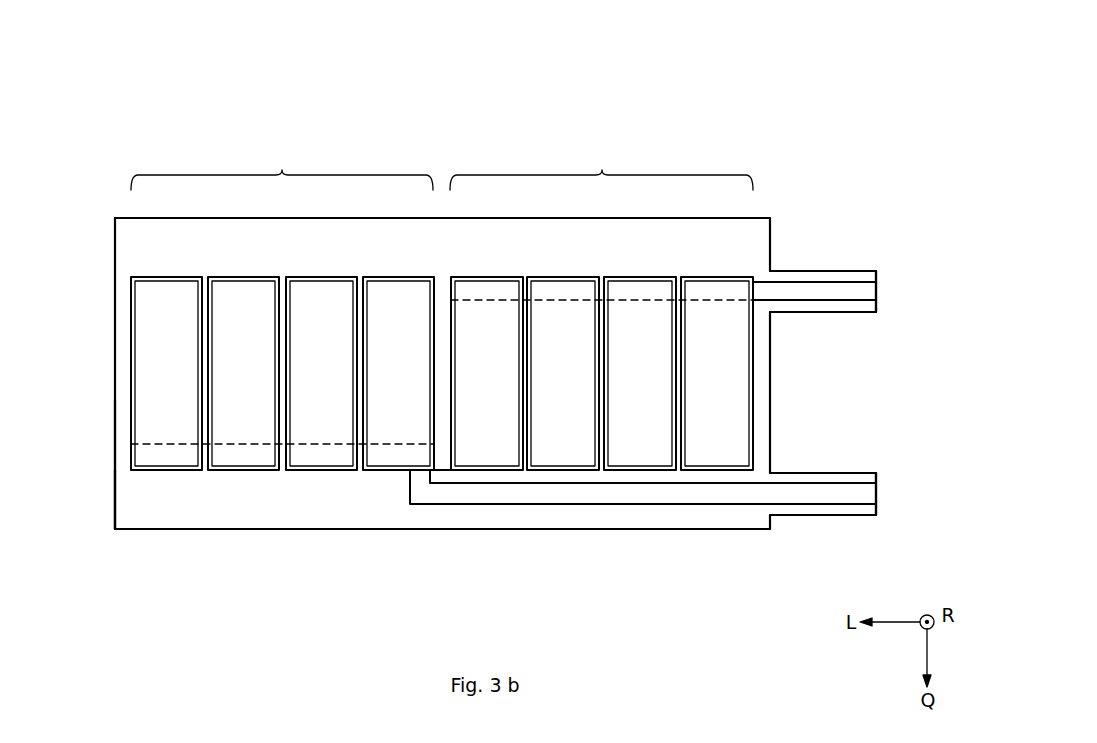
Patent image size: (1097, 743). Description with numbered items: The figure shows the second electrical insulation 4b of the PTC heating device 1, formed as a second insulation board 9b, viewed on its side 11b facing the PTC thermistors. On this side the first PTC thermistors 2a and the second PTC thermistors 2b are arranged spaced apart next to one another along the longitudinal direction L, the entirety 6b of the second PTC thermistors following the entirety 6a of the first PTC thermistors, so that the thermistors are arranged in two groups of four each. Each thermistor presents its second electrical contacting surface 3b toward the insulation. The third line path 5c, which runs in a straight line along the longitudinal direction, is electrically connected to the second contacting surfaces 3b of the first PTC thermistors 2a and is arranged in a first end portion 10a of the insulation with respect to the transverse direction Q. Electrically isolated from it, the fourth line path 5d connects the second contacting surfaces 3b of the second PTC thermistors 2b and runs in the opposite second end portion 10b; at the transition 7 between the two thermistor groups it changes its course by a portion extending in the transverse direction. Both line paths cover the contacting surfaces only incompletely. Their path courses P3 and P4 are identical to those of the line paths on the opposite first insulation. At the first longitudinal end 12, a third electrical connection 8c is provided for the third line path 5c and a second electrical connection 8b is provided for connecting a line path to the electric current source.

The PTC heating device 1 is at (889, 171).
The first end portion 10a is at (132, 240).
The second end portion 10b is at (128, 517).
The side facing the PTC thermistors 11b is at (147, 503).
The second electrical insulation 4b is at (442, 576).
The second insulation board 9b is at (162, 542).
The first PTC thermistors 2a is at (487, 298).
The second PTC thermistors 2b is at (166, 298).
The second electrical contacting surface 3b is at (188, 277).
The entirety of the first PTC thermistors 6a is at (602, 168).
The entirety of the second PTC thermistors 6b is at (282, 168).
The transition 7 is at (440, 473).
The second electrical connection 8b is at (860, 490).
The third electrical connection 8c is at (858, 294).
The first longitudinal end 12 is at (877, 290).
The third line path 5c is at (472, 300).
The fourth line path 5d is at (283, 462).
The path course of the third line path P3 is at (795, 262).
The path course of the fourth line path P4 is at (795, 517).